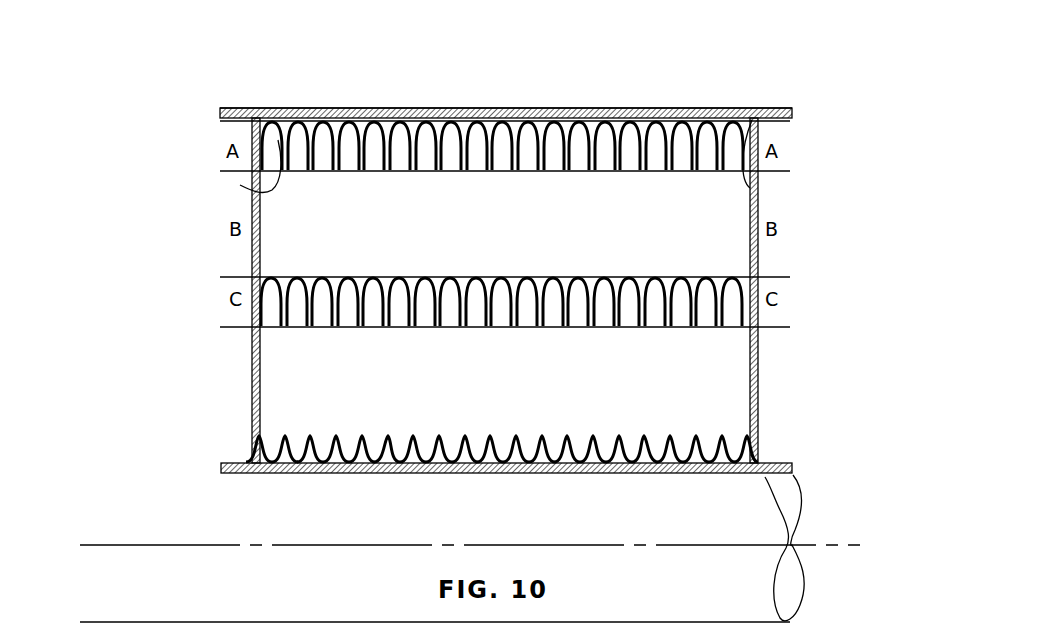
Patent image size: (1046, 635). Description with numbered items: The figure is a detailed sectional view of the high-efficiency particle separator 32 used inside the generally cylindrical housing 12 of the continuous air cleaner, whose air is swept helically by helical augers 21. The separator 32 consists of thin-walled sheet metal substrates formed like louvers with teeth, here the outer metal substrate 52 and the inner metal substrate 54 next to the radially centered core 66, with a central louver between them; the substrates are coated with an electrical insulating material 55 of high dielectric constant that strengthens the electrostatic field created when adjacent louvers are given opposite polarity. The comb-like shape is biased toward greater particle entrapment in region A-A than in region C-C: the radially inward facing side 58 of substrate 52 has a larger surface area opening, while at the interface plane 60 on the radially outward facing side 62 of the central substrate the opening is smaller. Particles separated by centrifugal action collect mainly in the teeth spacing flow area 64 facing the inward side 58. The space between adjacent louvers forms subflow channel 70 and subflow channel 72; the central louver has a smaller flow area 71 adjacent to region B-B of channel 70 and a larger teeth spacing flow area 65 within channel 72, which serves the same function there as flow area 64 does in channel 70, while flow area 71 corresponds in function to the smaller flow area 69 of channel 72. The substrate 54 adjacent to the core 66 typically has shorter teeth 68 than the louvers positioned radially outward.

The housing 12 is at (768, 110).
The high-efficiency particle separator 32 is at (598, 95).
The helical auger 21 is at (255, 362).
The metal substrate 54 is at (757, 445).
The metal substrate 52 is at (752, 133).
The electrical insulating material 55 is at (750, 188).
The interface plane 60 is at (227, 277).
The radially inward facing side 58 is at (240, 185).
The teeth spacing flow area 64 is at (297, 140).
The subflow channel 70 is at (446, 202).
The flow area 71 is at (283, 275).
The teeth spacing flow area 65 is at (687, 318).
The radially outward facing side 62 is at (726, 283).
The flow area 69 is at (298, 440).
The teeth 68 is at (733, 463).
The subflow channel 72 is at (385, 398).
The radially centered core 66 is at (802, 510).